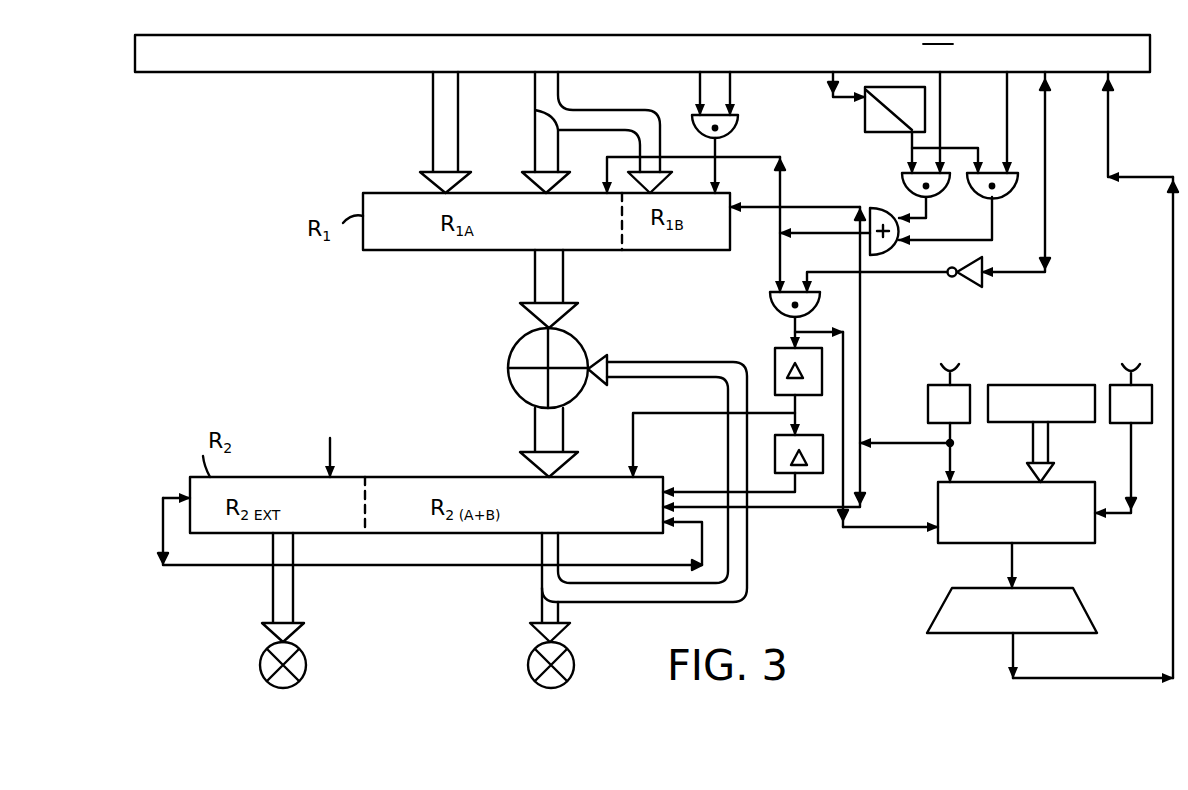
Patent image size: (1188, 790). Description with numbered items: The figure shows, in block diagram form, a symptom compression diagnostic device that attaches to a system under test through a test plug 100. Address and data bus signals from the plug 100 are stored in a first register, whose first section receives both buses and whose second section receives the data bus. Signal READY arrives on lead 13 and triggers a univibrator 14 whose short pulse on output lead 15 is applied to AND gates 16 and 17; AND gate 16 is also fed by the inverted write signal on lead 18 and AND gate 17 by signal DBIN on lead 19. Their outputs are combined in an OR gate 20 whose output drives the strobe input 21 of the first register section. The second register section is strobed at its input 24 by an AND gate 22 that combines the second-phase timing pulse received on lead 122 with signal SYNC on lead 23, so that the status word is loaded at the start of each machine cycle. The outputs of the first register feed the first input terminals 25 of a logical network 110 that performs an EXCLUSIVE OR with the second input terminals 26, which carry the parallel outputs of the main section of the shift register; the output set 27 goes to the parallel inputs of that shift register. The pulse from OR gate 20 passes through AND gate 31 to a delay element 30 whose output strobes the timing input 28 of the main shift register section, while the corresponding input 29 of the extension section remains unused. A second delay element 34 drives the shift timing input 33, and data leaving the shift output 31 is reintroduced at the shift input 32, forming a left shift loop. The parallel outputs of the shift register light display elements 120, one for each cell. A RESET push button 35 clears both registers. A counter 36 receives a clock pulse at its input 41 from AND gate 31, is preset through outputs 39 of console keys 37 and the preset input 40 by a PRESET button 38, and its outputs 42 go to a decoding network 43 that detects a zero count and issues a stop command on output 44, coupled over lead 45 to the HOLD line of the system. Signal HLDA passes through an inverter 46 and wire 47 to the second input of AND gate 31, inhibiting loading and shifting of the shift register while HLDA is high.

The test plug 100 is at (186, 74).
The lead 122 is at (700, 88).
The lead 23 is at (731, 92).
The AND gate 22 is at (737, 122).
The timing or strobe input 24 is at (716, 178).
The timing or strobe input 21 is at (607, 170).
The lead 13 is at (835, 100).
The univibrator 14 is at (866, 116).
The output lead 15 is at (910, 149).
The AND gate 16 is at (900, 183).
The AND gate 17 is at (1006, 197).
The lead 18 is at (942, 93).
The lead 19 is at (1009, 103).
The OR gate 20 is at (893, 206).
The inverter 46 is at (984, 282).
The wire 47 is at (878, 276).
The input terminals 25 is at (535, 294).
The logical network 110 is at (508, 361).
The input terminals 26 is at (608, 362).
The output set 27 is at (534, 439).
The timing input 28 is at (637, 457).
The input for parallel loading 29 is at (331, 466).
The delay element 30 is at (776, 348).
The AND gate 31 is at (770, 298).
The shift input 32 is at (692, 526).
The shift timing input 33 is at (706, 482).
The second delay element 34 is at (827, 423).
The RESET push button 35 is at (928, 392).
The counter 36 is at (1001, 482).
The console keys 37 is at (1041, 385).
The PRESET button 38 is at (1110, 385).
The outputs of keys 39 is at (1052, 452).
The preset input 40 is at (1108, 516).
The timing or clock input 41 is at (926, 527).
The counter output line 42 is at (1021, 562).
The decoding network 43 is at (938, 606).
The output 44 is at (1014, 654).
The lead 45 is at (1173, 601).
The display elements 120 is at (530, 667).